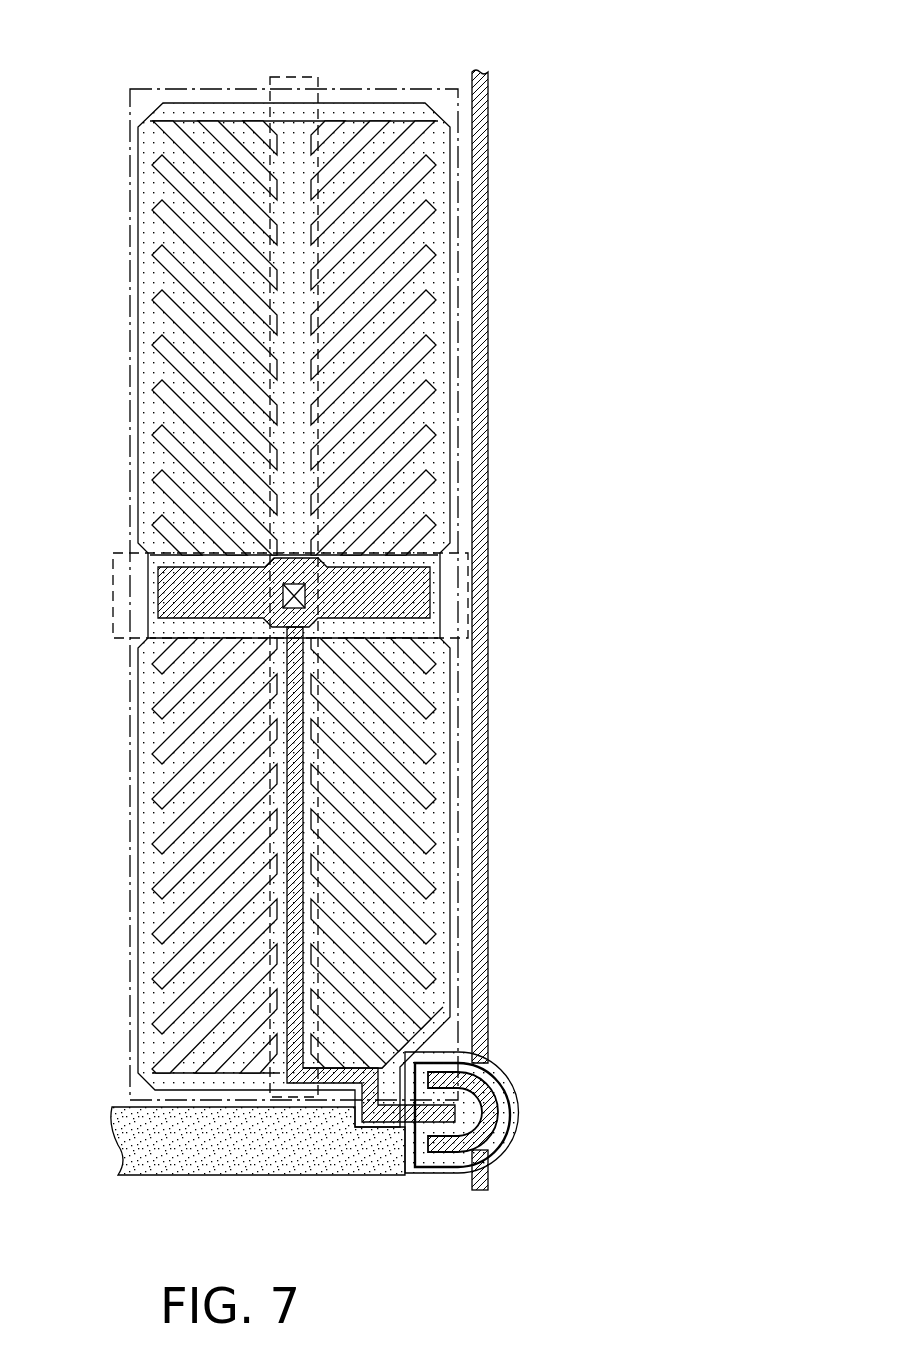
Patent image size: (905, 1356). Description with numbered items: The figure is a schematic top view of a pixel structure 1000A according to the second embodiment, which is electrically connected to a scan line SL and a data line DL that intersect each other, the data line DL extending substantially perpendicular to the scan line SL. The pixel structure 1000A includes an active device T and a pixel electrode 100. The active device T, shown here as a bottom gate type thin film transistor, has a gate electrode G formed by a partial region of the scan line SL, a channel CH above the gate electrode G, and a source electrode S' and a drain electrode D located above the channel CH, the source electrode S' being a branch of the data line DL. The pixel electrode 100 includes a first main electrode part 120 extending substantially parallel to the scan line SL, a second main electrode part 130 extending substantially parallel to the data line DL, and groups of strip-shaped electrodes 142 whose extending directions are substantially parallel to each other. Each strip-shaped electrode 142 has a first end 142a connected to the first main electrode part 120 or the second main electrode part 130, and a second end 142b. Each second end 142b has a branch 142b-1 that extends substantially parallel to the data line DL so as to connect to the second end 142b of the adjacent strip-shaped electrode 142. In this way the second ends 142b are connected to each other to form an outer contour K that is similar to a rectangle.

The pixel electrode 100 is at (114, 95).
The second main electrode part 130 is at (298, 75).
The outer contour K is at (397, 88).
The data line DL is at (482, 70).
The first main electrode part 120 is at (468, 572).
The strip-shaped electrode 142 is at (325, 680).
The first end 142a is at (348, 652).
The second end 142b is at (440, 750).
The branch 142b-1 is at (430, 735).
The scan line SL is at (132, 1130).
The drain electrode D is at (395, 1127).
The channel CH is at (416, 1160).
The gate electrode G is at (433, 1171).
The source electrode S' is at (463, 1147).
The active device T is at (450, 1222).
The pixel structure 1000A is at (626, 1211).